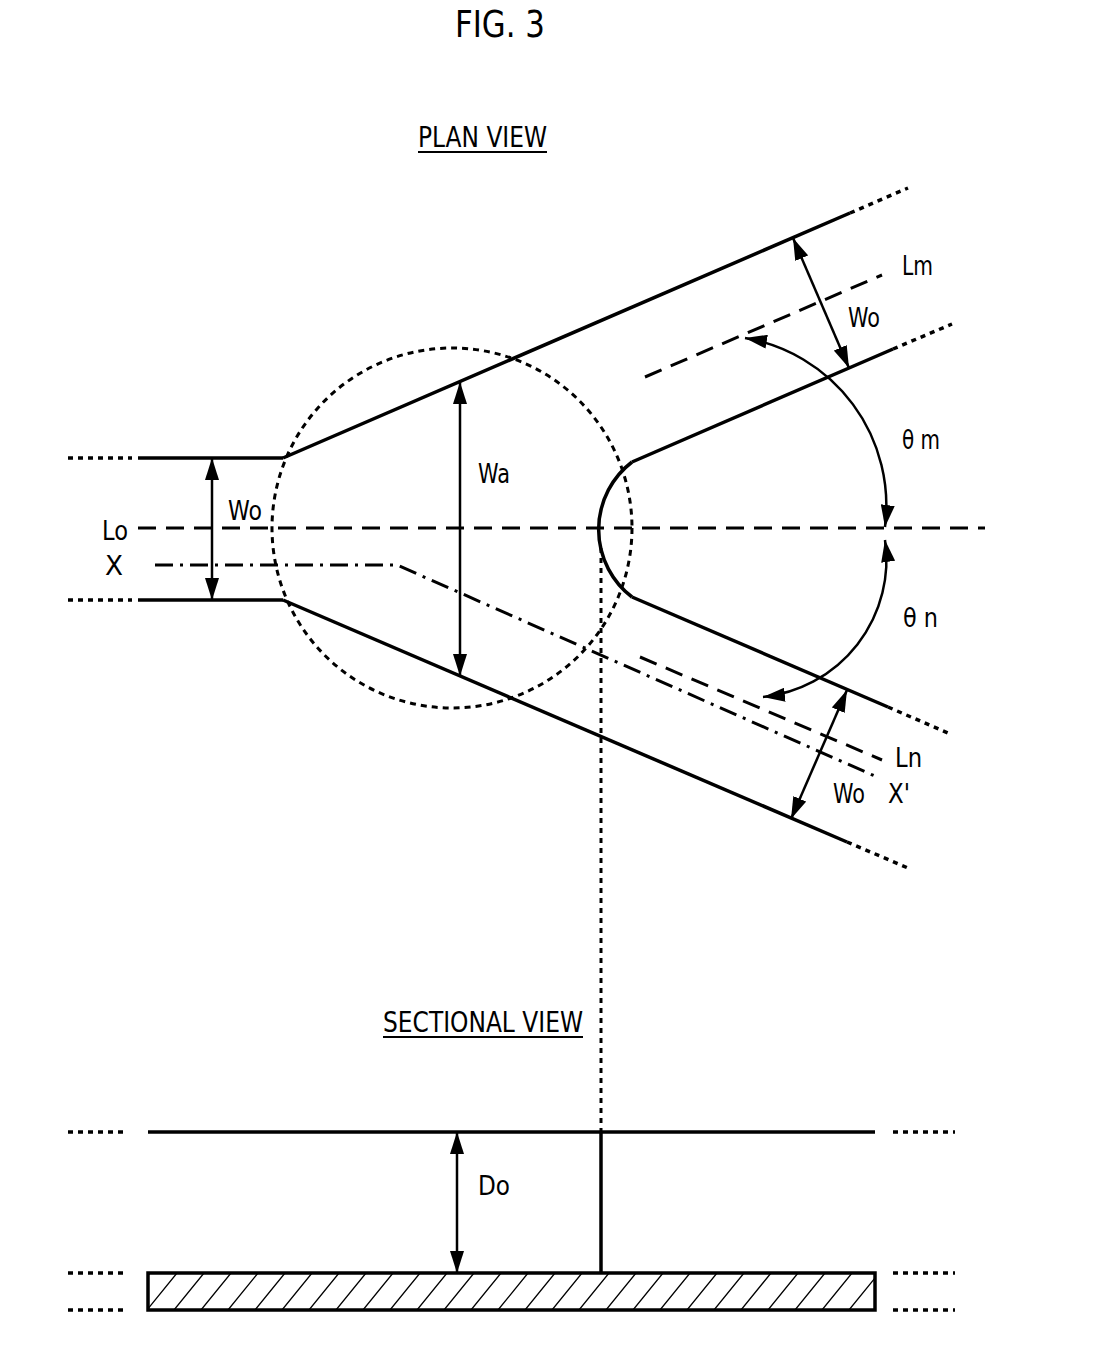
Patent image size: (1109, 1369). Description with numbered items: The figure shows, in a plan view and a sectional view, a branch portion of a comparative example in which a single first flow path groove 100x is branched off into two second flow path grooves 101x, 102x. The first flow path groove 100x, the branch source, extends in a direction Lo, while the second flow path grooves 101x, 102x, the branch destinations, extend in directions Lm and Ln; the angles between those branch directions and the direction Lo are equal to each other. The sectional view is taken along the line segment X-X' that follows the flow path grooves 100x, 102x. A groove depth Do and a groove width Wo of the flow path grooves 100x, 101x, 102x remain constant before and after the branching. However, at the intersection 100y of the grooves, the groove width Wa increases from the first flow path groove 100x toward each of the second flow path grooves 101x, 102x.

The first flow path groove 100x is at (247, 457).
The second flow path groove 101x is at (703, 277).
The second flow path groove 102x is at (708, 632).
The intersection 100y is at (632, 482).